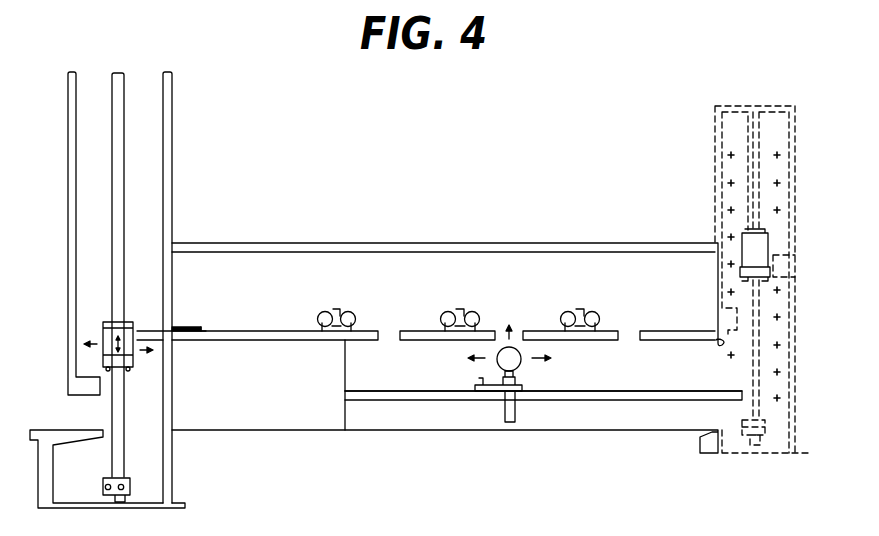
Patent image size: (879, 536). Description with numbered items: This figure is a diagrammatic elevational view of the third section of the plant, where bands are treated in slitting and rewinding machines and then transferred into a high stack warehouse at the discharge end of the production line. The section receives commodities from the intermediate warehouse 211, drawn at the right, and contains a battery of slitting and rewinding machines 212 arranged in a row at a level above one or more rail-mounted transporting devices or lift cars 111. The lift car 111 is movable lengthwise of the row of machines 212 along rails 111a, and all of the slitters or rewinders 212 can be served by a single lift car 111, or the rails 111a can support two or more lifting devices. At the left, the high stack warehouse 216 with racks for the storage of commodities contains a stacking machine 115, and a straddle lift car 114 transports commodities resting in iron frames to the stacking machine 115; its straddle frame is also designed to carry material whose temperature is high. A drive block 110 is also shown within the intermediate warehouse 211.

The intermediate warehouse 211 is at (778, 115).
The drive block 110 is at (770, 237).
The slitting and rewinding machines 212 is at (340, 310).
The lift car 111 is at (523, 387).
The rails 111a is at (406, 431).
The straddle lift car 114 is at (188, 327).
The stacking machine 115 is at (103, 350).
The high stack warehouse 216 is at (143, 476).